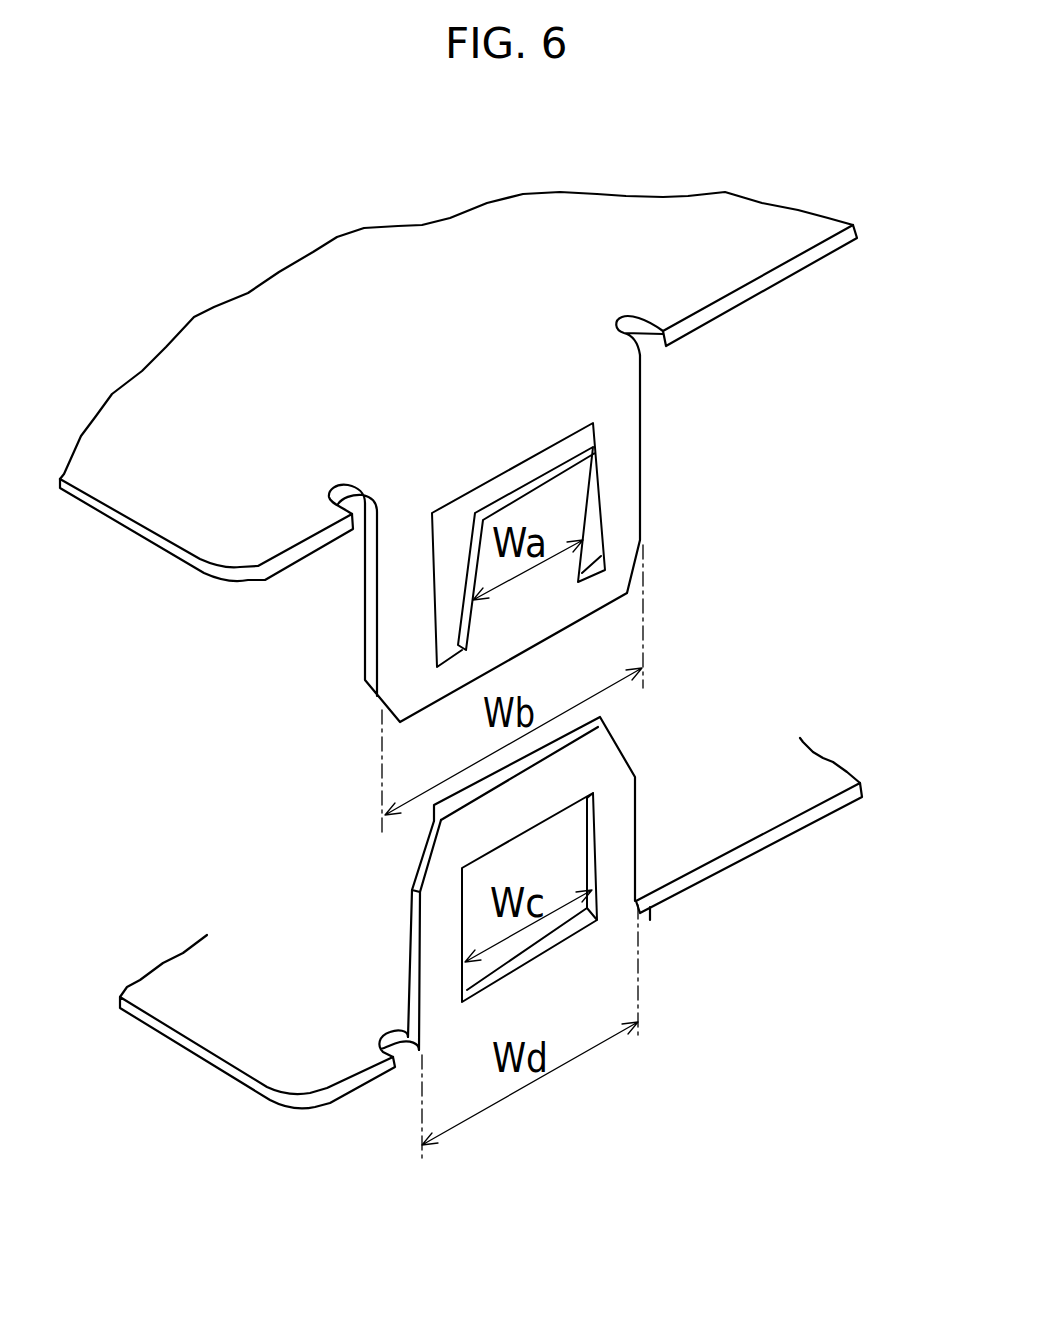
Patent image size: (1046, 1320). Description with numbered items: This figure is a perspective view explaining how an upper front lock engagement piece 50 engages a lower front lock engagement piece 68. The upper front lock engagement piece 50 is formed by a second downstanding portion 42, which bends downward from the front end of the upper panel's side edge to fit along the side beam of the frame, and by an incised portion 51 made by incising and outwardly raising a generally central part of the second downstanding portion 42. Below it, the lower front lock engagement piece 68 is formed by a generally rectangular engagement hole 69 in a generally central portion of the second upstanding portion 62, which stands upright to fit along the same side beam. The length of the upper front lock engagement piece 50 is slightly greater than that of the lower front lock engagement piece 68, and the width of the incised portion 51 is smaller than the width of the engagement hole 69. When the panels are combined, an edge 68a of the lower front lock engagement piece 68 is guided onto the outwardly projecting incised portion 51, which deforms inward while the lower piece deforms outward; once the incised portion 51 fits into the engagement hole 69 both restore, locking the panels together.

The second downstanding portion 42 is at (619, 431).
The upper front lock engagement piece 50 is at (672, 563).
The incised portion 51 is at (567, 485).
The second upstanding portion 62 is at (618, 823).
The lower front lock engagement piece 68 is at (661, 744).
The edge of the lower front lock engagement piece 68a is at (443, 803).
The engagement hole 69 is at (570, 933).